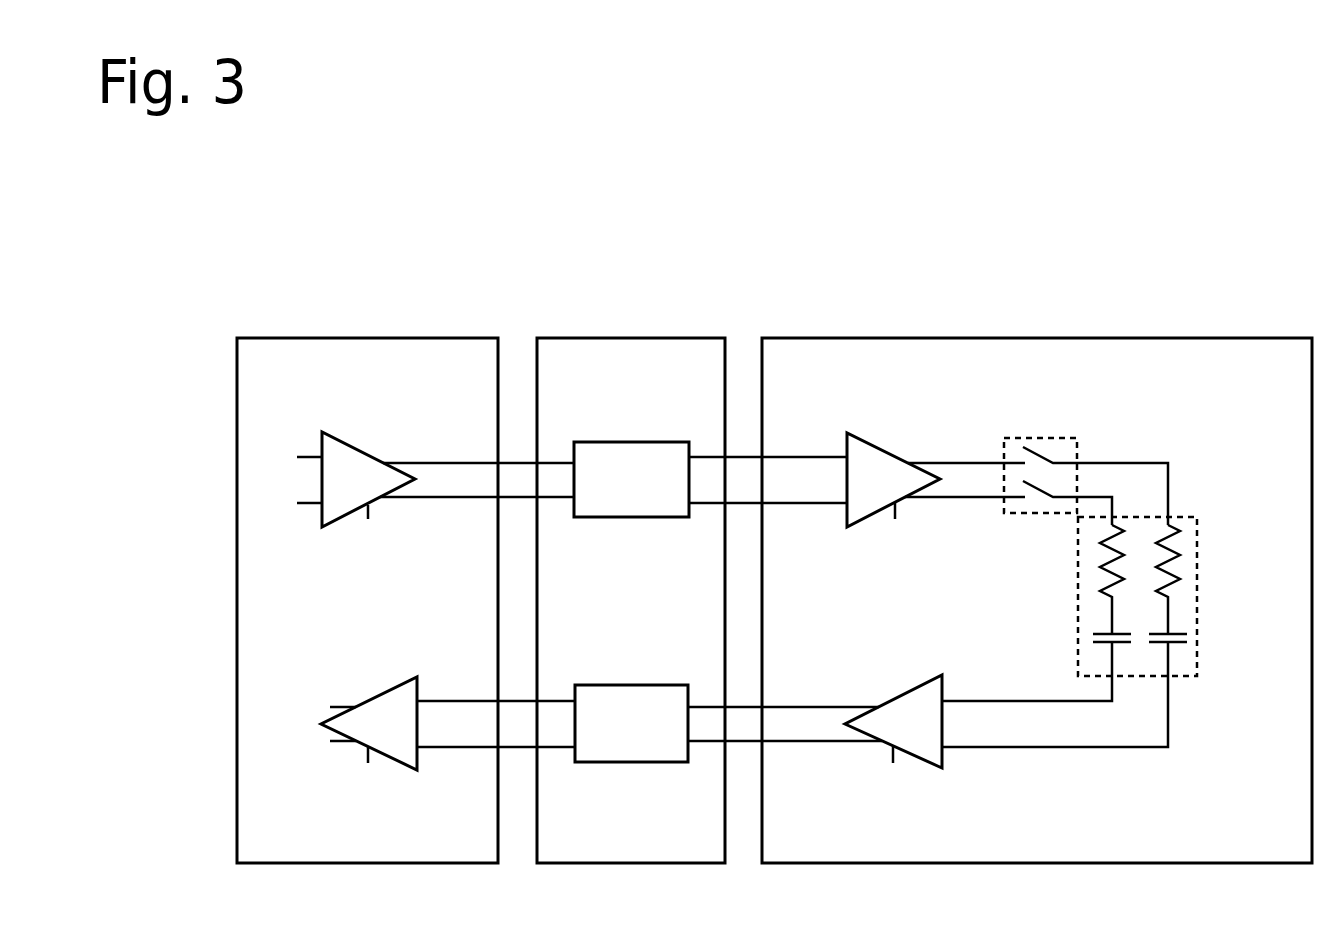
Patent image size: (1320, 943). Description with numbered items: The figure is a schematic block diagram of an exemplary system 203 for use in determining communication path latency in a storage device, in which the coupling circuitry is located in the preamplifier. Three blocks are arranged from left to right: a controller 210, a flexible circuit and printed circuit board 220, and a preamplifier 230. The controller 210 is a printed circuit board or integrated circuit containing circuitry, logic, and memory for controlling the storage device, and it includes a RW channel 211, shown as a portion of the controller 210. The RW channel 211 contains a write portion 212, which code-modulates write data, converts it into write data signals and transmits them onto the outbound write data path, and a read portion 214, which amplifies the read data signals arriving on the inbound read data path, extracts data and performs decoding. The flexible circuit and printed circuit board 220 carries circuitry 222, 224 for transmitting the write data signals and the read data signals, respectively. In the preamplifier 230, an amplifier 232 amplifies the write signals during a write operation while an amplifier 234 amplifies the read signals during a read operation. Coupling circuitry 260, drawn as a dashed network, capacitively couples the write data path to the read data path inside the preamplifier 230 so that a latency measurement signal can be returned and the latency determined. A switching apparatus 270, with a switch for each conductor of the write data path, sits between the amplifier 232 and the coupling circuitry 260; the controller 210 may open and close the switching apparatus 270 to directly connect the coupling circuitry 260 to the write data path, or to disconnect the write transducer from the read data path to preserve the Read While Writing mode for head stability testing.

The exemplary system 203 is at (238, 240).
The controller 210 is at (267, 338).
The RW channel 211 is at (428, 405).
The write portion 212 is at (435, 479).
The read portion 214 is at (448, 723).
The flexible circuit and printed circuit board 220 is at (567, 338).
The circuitry 222 is at (710, 479).
The circuitry 224 is at (728, 723).
The preamplifier 230 is at (790, 338).
The amplifier 232 is at (936, 480).
The amplifier 234 is at (1006, 705).
The coupling circuitry 260 is at (1078, 612).
The switching apparatus 270 is at (1024, 438).